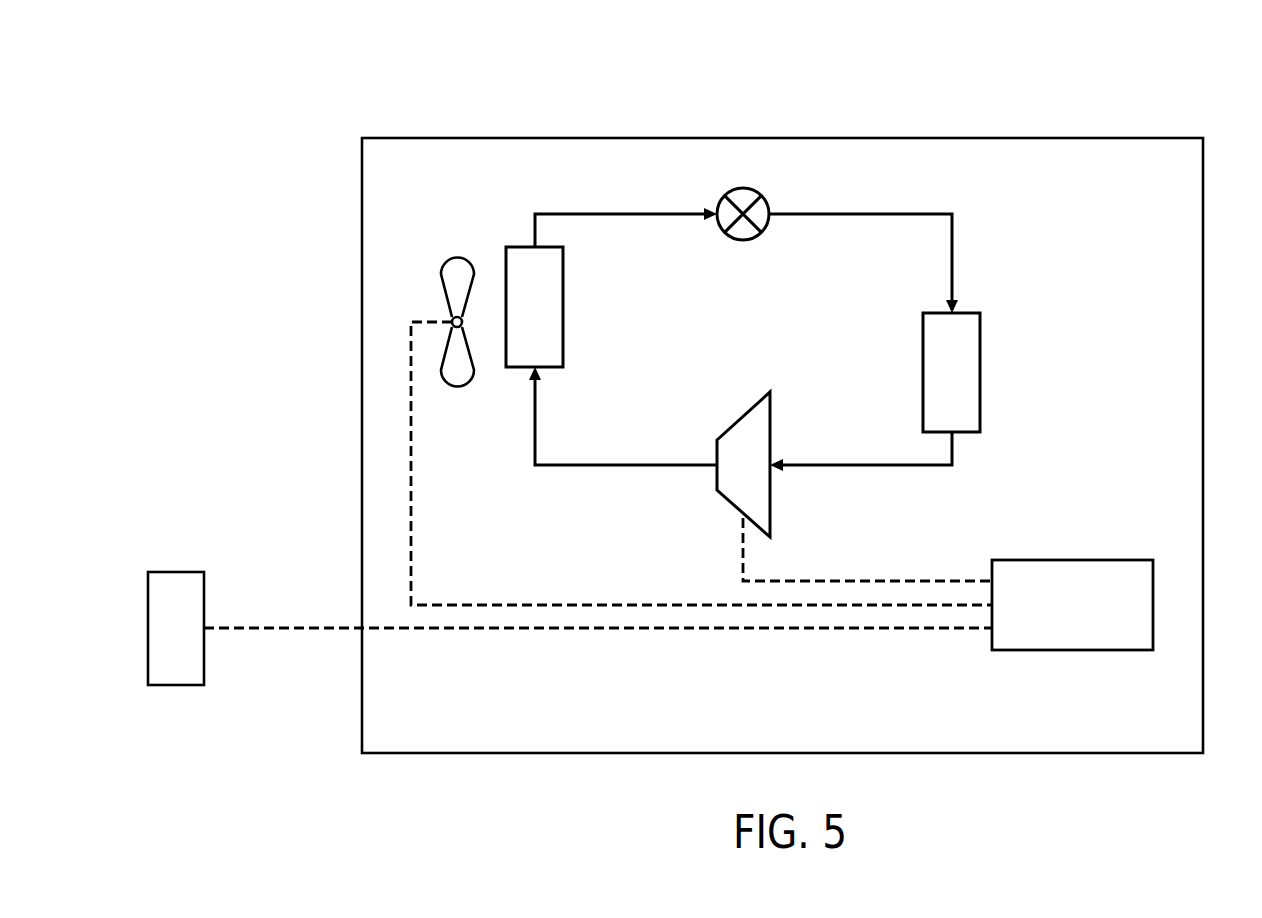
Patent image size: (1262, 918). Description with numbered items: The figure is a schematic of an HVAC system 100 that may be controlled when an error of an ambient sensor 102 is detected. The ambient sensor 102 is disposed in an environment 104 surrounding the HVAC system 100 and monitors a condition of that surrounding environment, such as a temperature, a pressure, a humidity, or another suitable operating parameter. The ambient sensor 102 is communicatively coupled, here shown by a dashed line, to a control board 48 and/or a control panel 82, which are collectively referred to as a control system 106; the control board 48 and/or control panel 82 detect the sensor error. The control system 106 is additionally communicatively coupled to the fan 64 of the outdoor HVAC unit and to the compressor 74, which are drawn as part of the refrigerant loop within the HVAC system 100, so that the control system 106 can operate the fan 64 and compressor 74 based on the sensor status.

The HVAC system 100 is at (1112, 96).
The fan 64 is at (457, 247).
The compressor 74 is at (745, 413).
The control board 48 is at (1065, 612).
The control panel 82 is at (1075, 612).
The control system 106 is at (1072, 650).
The ambient sensor 102 is at (175, 685).
The environment 104 is at (218, 410).